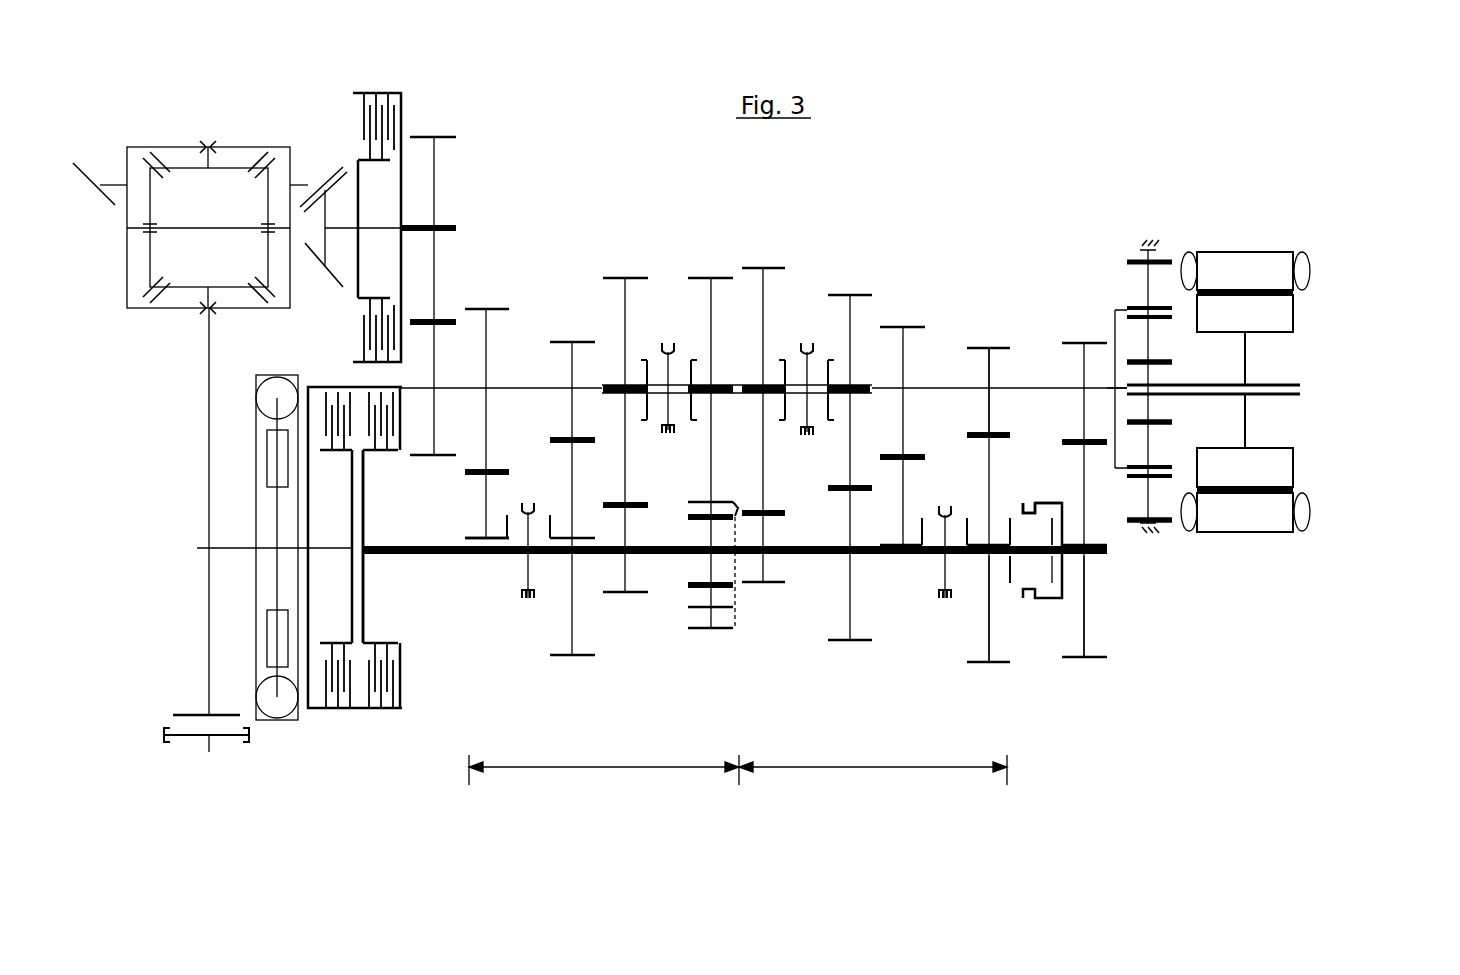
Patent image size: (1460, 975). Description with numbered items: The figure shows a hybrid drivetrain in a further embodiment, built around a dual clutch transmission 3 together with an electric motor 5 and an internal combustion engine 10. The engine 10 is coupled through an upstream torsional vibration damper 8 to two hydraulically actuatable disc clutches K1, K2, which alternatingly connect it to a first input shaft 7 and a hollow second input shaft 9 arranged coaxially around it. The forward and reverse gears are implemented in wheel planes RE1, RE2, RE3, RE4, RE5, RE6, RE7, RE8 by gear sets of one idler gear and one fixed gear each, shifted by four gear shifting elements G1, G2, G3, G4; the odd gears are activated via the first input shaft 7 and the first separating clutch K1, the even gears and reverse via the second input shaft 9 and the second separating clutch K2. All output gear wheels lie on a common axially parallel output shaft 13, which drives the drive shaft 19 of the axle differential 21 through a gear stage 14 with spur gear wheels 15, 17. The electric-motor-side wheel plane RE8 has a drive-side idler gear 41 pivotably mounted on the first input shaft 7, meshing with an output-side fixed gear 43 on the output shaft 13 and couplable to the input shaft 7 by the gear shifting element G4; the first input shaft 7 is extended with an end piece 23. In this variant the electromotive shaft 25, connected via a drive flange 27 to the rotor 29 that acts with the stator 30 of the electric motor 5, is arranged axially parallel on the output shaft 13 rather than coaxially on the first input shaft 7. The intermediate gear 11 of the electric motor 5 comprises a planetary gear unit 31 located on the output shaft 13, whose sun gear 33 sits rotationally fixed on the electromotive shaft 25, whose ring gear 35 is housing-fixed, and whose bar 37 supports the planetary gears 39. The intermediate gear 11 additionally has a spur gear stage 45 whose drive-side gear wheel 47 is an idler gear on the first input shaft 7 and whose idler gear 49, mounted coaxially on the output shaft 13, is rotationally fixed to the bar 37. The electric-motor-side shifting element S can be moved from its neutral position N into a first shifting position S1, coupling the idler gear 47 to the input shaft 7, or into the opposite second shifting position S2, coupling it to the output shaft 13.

The dual clutch transmission 3 is at (469, 817).
The electric motor 5 is at (1287, 348).
The first input shaft 7 is at (805, 547).
The torsional vibration damper 8 is at (281, 722).
The second input shaft 9 is at (390, 548).
The internal combustion engine 10 is at (240, 549).
The intermediate gear 11 is at (1213, 548).
The output shaft 13 is at (500, 386).
The gear stage 14 is at (495, 288).
The spur gear wheel 15 is at (433, 340).
The spur gear wheel 17 is at (438, 196).
The drive shaft 19 is at (380, 225).
The axle differential 21 is at (180, 146).
The end piece 23 is at (1022, 556).
The electromotive shaft 25 is at (1260, 341).
The drive flange 27 is at (1252, 365).
The rotor 29 is at (1278, 312).
The stator 30 is at (1255, 262).
The planetary gear unit 31 is at (1217, 492).
The sun gear 33 is at (1150, 403).
The ring gear 35 is at (1152, 540).
The bar 37 is at (1118, 442).
The planetary gears 39 is at (1157, 540).
The drive-side idler gear 41 is at (986, 618).
The output-side fixed gear 43 is at (985, 415).
The spur gear stage 45 is at (1176, 600).
The drive-side gear wheel 47 is at (1087, 618).
The idler gear 49 is at (1087, 420).
The first separating clutch K1 is at (355, 566).
The second separating clutch K2 is at (380, 597).
The electric-motor-side shifting element S is at (995, 150).
The first shifting position S1 is at (1050, 490).
The second shifting position S2 is at (1010, 503).
The neutral position N is at (1030, 495).
The wheel plane RE1 is at (491, 405).
The wheel plane RE2 is at (572, 481).
The wheel plane RE3 is at (630, 414).
The wheel plane RE4 is at (710, 437).
The wheel plane RE5 is at (770, 407).
The wheel plane RE6 is at (852, 448).
The wheel plane RE7 is at (906, 420).
The electric-motor-side wheel plane RE8 is at (986, 488).
The gear shifting element G1 is at (530, 536).
The gear shifting element G2 is at (669, 372).
The gear shifting element G3 is at (806, 373).
The gear shifting element G4 is at (945, 536).